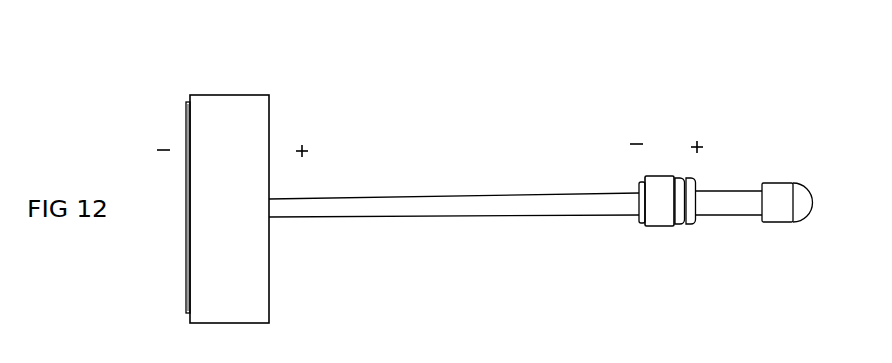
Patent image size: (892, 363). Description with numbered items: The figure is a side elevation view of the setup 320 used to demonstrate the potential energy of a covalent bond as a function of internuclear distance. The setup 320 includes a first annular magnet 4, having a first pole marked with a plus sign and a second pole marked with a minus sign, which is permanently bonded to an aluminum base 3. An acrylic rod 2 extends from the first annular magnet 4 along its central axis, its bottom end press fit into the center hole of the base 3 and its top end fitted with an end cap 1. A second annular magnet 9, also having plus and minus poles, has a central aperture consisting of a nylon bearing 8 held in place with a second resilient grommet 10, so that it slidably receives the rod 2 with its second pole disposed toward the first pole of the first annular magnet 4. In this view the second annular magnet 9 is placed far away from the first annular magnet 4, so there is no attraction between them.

The end cap 1 is at (780, 222).
The rod 2 is at (486, 216).
The base 3 is at (269, 123).
The first annular magnet 4 is at (186, 292).
The nylon bearing 8 is at (642, 223).
The second annular magnet 9 is at (660, 226).
The second resilient grommet 10 is at (693, 224).
The setup 320 is at (767, 80).